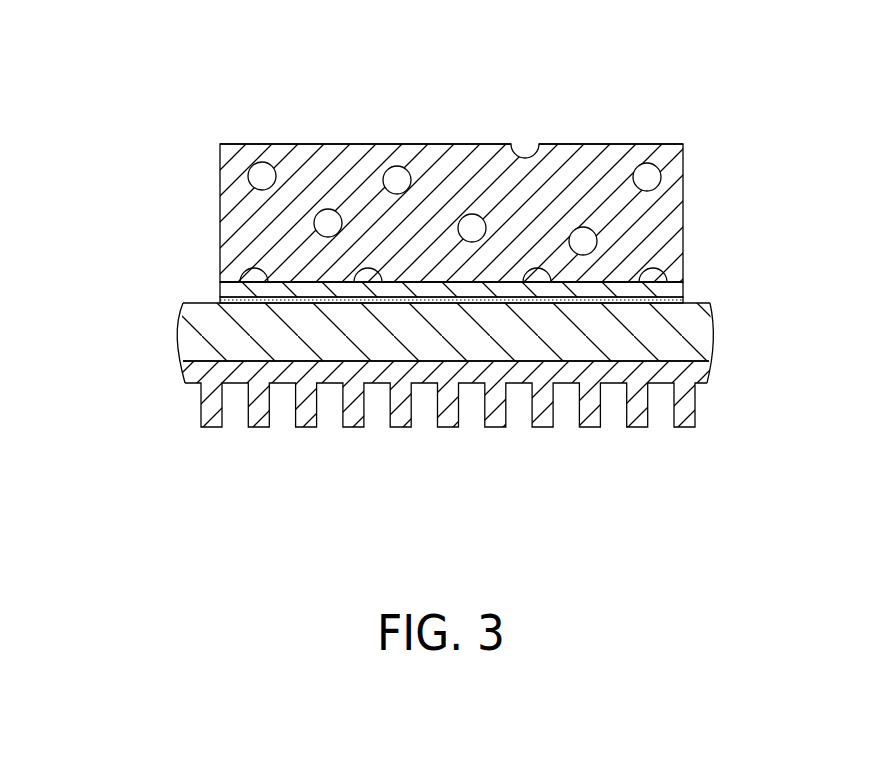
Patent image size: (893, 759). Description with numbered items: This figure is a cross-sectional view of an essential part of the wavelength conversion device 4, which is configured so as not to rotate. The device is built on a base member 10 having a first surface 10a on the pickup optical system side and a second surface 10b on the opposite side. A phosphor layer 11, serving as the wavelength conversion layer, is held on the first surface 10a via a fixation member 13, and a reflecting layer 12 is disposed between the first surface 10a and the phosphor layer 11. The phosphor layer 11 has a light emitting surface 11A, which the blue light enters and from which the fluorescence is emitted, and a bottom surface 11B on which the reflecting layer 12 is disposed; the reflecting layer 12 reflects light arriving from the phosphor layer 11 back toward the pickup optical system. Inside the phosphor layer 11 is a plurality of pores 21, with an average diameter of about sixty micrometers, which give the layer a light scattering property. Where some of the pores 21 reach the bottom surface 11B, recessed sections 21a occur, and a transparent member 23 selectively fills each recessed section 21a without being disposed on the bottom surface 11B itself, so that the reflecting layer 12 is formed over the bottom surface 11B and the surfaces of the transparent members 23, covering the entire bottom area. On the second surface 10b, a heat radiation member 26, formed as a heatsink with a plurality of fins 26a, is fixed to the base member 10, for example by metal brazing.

The wavelength conversion device 4 is at (690, 97).
The base member 10 is at (436, 337).
The first surface 10a is at (186, 303).
The second surface 10b is at (187, 382).
The phosphor layer 11 is at (430, 172).
The light emitting surface 11A is at (623, 144).
The bottom surface 11B is at (222, 290).
The reflecting layer 12 is at (680, 287).
The fixation member 13 is at (683, 300).
The pores 21 is at (470, 214).
The recessed sections 21a is at (245, 270).
The transparent member 23 is at (363, 272).
The heat radiation member 26 is at (491, 442).
The fins 26a is at (683, 403).